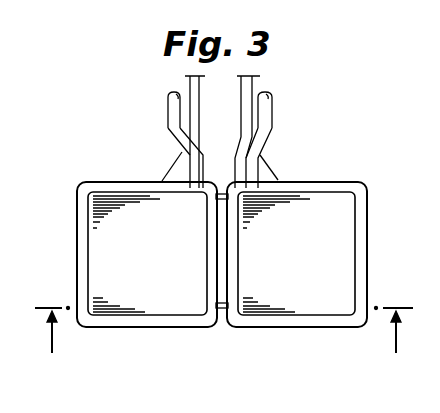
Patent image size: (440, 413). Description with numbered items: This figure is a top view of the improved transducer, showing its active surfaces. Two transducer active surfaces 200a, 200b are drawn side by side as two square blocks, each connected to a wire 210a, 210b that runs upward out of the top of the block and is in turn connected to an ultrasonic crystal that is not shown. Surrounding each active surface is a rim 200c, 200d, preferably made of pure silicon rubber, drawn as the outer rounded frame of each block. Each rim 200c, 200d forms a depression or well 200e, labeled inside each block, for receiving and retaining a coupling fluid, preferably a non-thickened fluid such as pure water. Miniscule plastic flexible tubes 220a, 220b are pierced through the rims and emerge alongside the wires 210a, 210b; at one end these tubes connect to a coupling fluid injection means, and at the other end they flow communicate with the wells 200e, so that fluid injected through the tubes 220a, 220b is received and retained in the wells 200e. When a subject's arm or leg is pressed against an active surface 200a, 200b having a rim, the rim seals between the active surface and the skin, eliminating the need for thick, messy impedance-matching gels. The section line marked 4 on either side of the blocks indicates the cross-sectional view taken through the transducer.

The active surface 200a is at (138, 328).
The active surface 200b is at (332, 328).
The rim 200c is at (129, 182).
The rim 200d is at (290, 184).
The well 200e is at (215, 255).
The wire 210a is at (190, 83).
The wire 210b is at (252, 80).
The flexible tube 220a is at (170, 115).
The flexible tube 220b is at (272, 112).
The section line 4- 4 is at (224, 315).